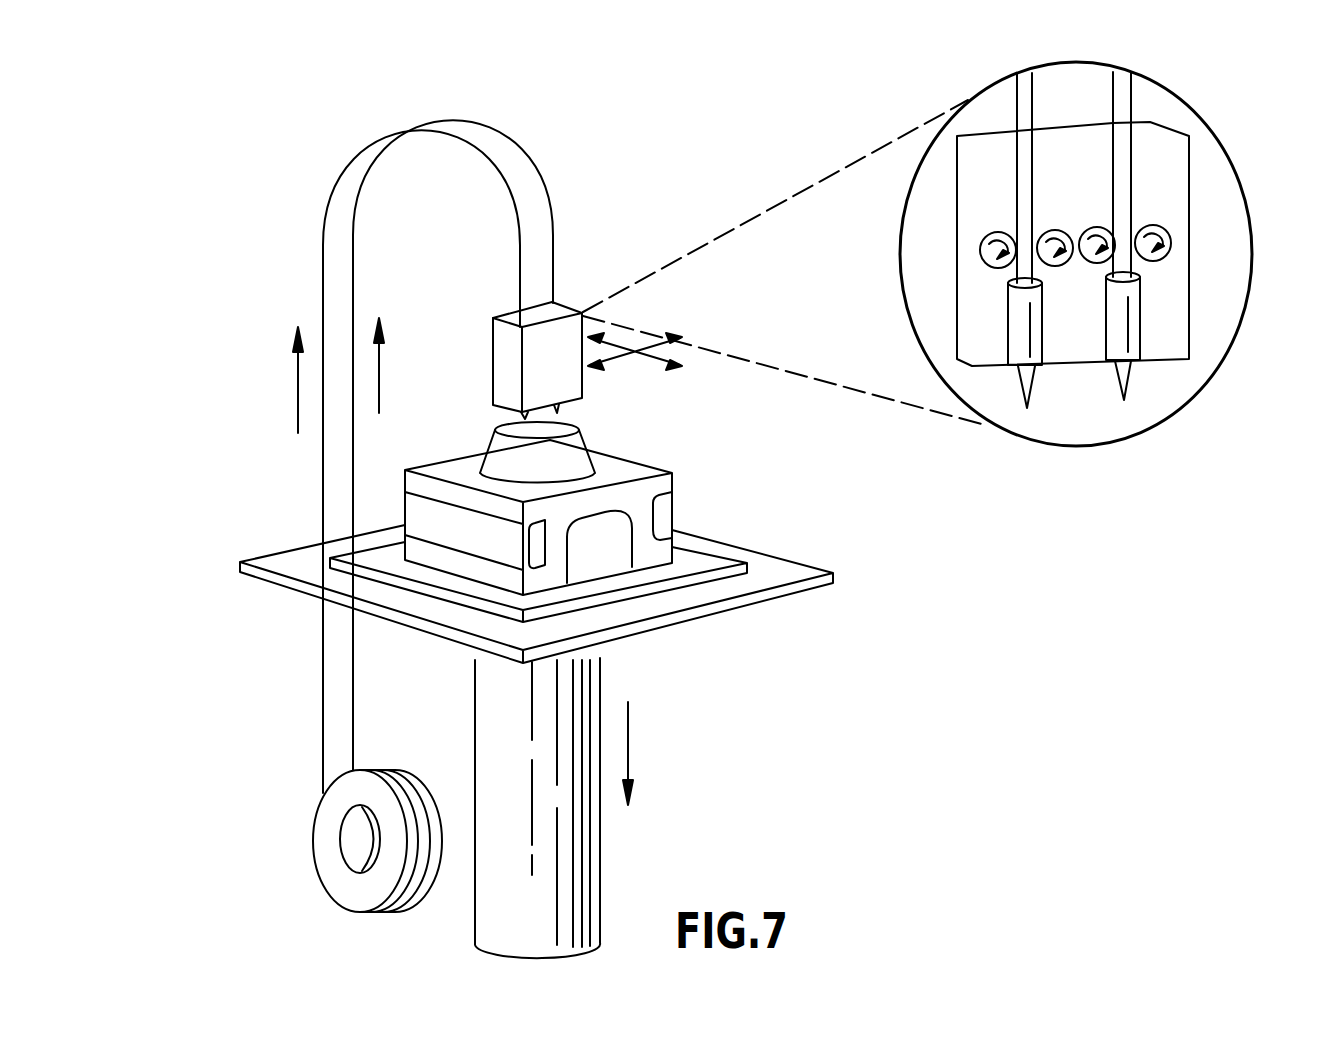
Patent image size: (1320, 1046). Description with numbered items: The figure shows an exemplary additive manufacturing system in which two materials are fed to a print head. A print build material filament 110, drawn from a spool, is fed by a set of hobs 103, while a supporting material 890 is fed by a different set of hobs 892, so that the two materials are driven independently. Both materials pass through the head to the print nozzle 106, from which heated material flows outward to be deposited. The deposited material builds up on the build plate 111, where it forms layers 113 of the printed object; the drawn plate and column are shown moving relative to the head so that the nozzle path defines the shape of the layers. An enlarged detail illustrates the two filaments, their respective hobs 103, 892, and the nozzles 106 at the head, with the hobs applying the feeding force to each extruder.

The hobs 103 is at (980, 248).
The print nozzle 106 is at (1018, 380).
The print build material filament 110 is at (313, 851).
The build plate 111 is at (367, 546).
The layers 113 is at (633, 453).
The supporting material 890 is at (390, 768).
The hobs 892 is at (672, 508).